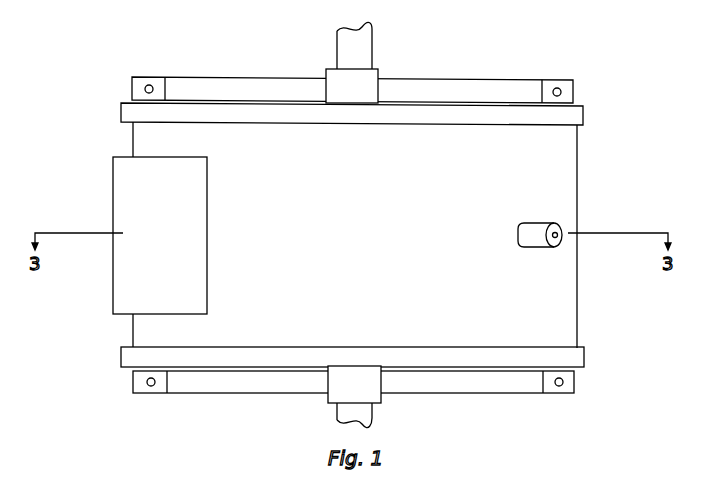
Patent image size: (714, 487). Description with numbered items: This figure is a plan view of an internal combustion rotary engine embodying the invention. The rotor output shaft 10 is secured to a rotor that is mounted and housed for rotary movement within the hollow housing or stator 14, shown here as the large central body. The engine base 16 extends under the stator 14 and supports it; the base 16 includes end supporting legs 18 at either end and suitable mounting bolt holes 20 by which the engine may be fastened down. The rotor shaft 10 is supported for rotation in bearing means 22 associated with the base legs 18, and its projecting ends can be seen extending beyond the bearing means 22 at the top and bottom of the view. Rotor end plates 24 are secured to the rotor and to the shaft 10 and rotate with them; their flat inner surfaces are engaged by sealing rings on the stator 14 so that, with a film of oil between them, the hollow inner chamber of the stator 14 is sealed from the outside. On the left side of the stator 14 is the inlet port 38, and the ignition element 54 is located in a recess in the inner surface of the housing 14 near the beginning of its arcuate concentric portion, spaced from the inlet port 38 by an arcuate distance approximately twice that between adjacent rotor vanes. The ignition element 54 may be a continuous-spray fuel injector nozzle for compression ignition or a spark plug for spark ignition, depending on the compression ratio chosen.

The rotor output shaft 10 is at (365, 47).
The hollow housing or stator 14 is at (570, 268).
The engine base 16 is at (240, 388).
The end supporting legs 18 is at (447, 87).
The mounting bolt holes 20 is at (557, 88).
The bearing means 22 is at (368, 78).
The rotor end plates 24 is at (577, 118).
The inlet port 38 is at (125, 247).
The ignition element 54 is at (545, 223).